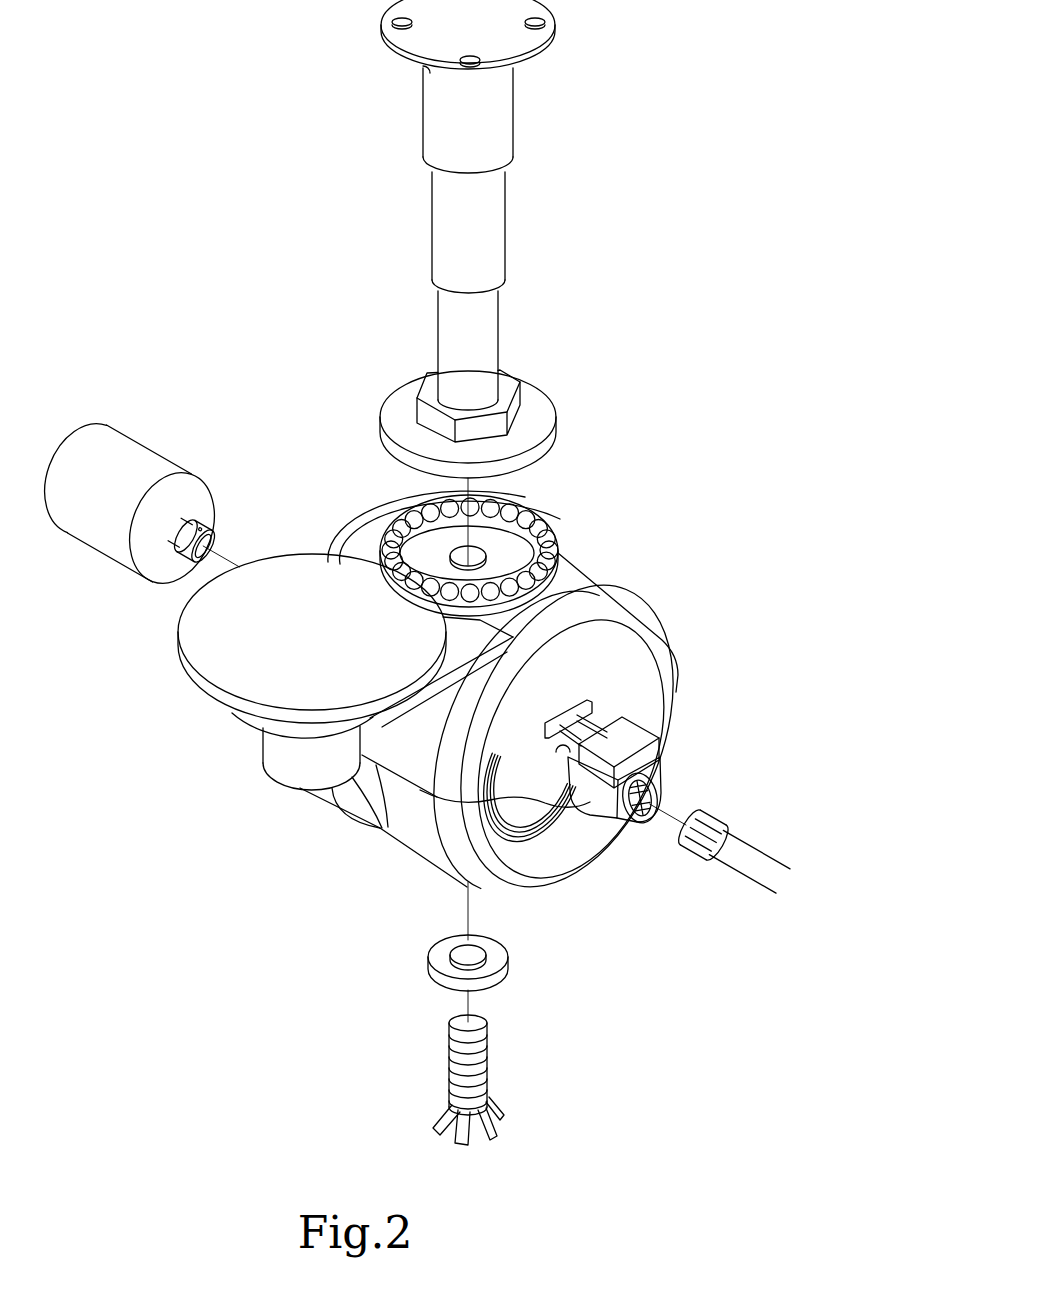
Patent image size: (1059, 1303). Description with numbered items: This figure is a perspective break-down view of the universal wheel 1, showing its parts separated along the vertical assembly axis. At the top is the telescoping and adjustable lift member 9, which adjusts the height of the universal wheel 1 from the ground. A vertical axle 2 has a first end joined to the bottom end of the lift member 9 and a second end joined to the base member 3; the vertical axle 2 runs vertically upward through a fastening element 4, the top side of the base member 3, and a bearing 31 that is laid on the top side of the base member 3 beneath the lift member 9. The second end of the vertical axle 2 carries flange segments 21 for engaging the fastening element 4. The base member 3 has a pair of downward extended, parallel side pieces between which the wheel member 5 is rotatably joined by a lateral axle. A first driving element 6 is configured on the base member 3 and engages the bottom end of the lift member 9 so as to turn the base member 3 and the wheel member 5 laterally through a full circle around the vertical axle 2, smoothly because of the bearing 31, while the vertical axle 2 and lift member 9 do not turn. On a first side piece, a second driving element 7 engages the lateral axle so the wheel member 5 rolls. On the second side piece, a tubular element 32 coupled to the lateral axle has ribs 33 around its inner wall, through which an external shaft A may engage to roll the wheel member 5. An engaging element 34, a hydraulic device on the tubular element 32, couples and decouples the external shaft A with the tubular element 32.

The universal wheel 1 is at (322, 472).
The vertical axle 2 is at (458, 1070).
The flange segments 21 is at (493, 1120).
The base member 3 is at (597, 587).
The bearing 31 is at (540, 532).
The tubular element 32 is at (653, 768).
The ribs 33 is at (635, 807).
The engaging element 34 is at (627, 738).
The fastening element 4 is at (498, 978).
The wheel member 5 is at (427, 835).
The first driving element 6 is at (287, 763).
The second driving element 7 is at (88, 453).
The lift member 9 is at (493, 213).
The external shaft A is at (748, 877).